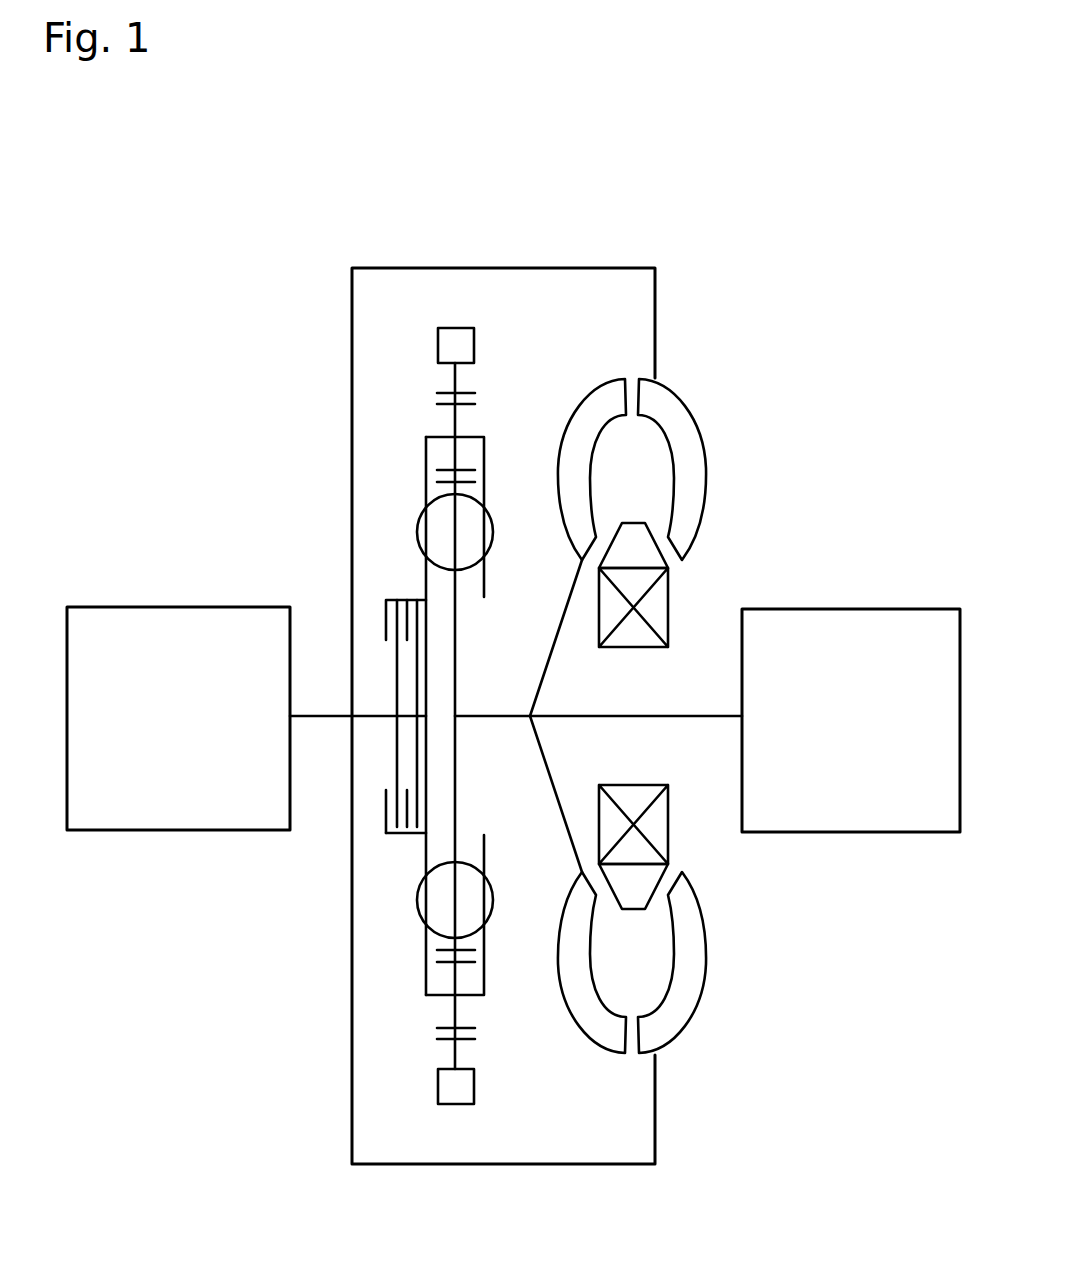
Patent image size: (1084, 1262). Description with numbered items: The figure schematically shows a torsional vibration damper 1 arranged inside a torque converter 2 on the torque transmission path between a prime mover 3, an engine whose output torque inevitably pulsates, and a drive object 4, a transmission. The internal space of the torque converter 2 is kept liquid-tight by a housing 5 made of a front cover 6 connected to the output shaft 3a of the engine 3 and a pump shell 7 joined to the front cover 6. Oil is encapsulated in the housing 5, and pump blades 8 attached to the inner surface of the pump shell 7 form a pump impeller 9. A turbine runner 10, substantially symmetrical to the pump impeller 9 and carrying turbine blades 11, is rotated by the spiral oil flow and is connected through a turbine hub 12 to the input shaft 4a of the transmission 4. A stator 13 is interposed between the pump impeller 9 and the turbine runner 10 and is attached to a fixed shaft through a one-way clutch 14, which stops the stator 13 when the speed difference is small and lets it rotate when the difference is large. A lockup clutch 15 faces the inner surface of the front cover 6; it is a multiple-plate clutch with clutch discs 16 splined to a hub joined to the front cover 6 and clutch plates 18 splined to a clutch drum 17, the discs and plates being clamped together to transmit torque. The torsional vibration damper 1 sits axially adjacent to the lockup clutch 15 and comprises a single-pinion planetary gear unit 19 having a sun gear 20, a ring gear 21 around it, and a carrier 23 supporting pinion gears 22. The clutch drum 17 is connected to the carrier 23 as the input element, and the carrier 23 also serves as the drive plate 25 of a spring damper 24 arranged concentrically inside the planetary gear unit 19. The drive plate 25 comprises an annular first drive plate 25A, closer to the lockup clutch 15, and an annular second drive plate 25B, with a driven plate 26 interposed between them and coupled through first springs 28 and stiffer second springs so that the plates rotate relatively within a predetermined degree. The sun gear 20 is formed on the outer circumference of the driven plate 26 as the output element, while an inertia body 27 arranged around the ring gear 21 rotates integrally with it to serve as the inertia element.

The torsional vibration damper 1 is at (598, 338).
The torque converter 2 is at (615, 178).
The prime mover 3 is at (113, 605).
The output shaft 3a is at (312, 716).
The drive object 4 is at (857, 610).
The input shaft 4a is at (685, 717).
The housing 5 is at (545, 174).
The front cover 6 is at (352, 293).
The pump shell 7 is at (657, 303).
The pump blades 8 is at (668, 412).
The pump impeller 9 is at (666, 702).
The turbine runner 10 is at (605, 494).
The turbine blades 11 is at (666, 469).
The turbine hub 12 is at (545, 680).
The stator 13 is at (645, 552).
The one-way clutch 14 is at (665, 595).
The lockup clutch 15 is at (370, 602).
The clutch discs 16 is at (417, 742).
The clutch drum 17 is at (417, 833).
The clutch plates 18 is at (426, 808).
The single-pinion planetary gear unit 19 is at (496, 368).
The sun gear 20 is at (443, 483).
The ring gear 21 is at (447, 392).
The pinion gears 22 is at (443, 405).
The carrier 23 is at (335, 716).
The spring damper 24 is at (394, 920).
The drive plate 25 is at (335, 716).
The first drive plate 25A is at (426, 457).
The second drive plate 25B is at (480, 585).
The driven plate 26 is at (457, 628).
The inertia body 27 is at (453, 325).
The first springs 28 is at (493, 523).